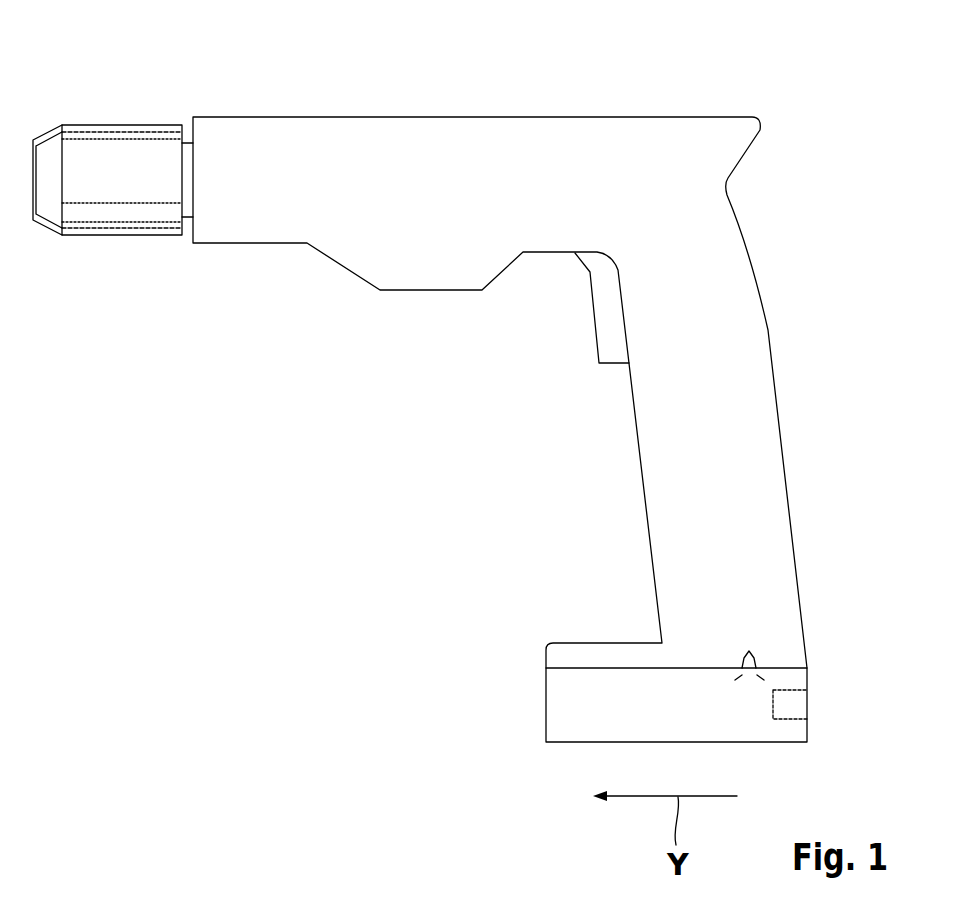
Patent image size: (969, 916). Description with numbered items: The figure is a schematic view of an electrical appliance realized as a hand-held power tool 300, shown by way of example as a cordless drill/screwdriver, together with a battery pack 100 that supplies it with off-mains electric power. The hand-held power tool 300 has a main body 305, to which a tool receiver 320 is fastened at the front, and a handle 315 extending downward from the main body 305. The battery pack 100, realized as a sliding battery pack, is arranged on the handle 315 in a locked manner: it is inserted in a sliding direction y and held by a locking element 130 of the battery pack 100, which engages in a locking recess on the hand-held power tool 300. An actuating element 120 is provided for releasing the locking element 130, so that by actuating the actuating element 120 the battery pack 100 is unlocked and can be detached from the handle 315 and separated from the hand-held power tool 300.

The hand-held power tool 300 is at (699, 94).
The main body 305 is at (408, 147).
The handle 315 is at (732, 315).
The tool receiver 320 is at (118, 147).
The battery pack 100 is at (560, 718).
The actuating element 120 is at (793, 705).
The locking element 130 is at (760, 655).